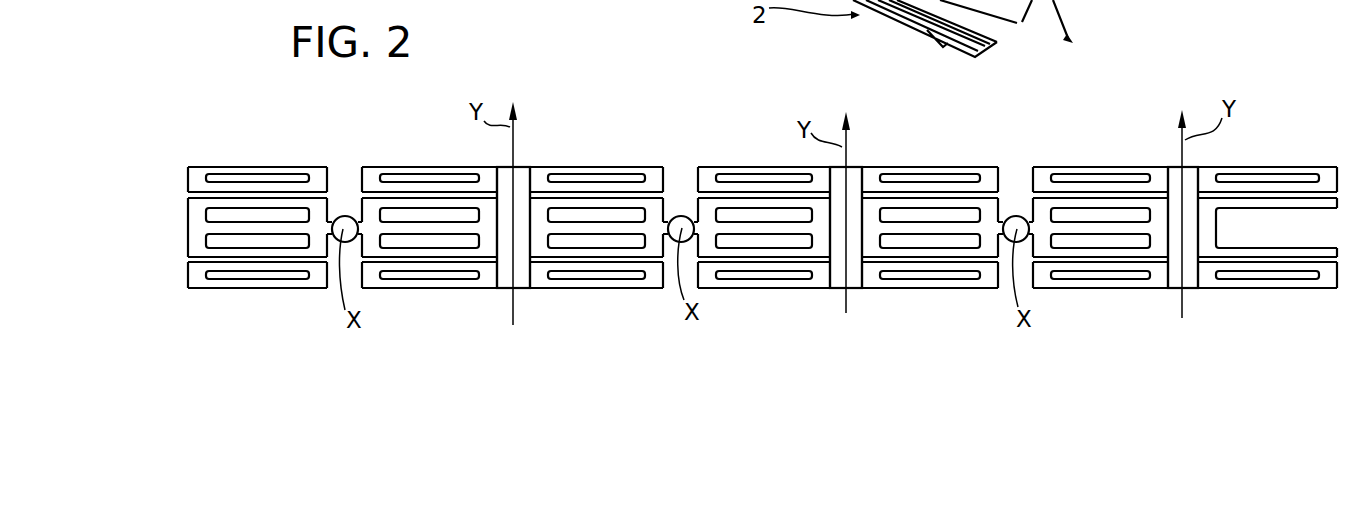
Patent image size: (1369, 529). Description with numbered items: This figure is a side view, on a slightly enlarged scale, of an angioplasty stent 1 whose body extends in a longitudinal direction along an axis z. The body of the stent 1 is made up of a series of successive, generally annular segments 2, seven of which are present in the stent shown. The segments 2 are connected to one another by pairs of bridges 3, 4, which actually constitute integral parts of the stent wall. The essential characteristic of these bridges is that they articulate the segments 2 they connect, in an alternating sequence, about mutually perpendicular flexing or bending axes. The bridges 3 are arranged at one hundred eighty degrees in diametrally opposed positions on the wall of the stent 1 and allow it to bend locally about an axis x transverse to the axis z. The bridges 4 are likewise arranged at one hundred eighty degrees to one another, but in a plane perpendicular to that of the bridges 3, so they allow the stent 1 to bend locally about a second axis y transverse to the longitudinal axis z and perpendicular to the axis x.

The angioplasty stent 1 is at (770, 299).
The annular segment 2 is at (180, 227).
The bridge 3 is at (362, 222).
The bridge 4 is at (522, 168).